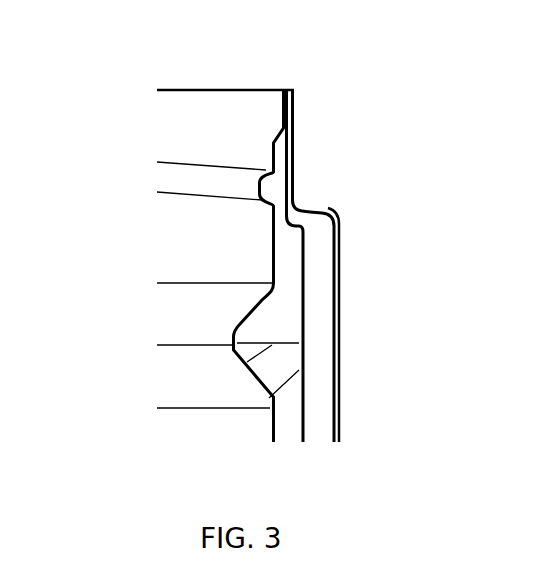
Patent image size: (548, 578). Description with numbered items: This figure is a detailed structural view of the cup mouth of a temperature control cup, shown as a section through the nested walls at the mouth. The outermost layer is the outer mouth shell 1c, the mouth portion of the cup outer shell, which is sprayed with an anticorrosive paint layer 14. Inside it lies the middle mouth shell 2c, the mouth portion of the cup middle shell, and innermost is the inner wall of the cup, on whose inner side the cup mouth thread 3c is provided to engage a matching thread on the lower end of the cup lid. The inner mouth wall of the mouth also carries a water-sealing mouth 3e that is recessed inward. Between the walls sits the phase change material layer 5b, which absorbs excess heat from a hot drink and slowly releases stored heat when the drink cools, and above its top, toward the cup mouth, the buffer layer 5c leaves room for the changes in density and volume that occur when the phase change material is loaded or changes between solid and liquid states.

The cup mouth thread 3c is at (261, 181).
The water-sealing mouth 3e is at (258, 378).
The outer mouth shell 1c is at (294, 122).
The middle mouth shell 2c is at (293, 220).
The anticorrosive paint layer 14 is at (337, 313).
The buffer layer 5c is at (288, 312).
The phase change material layer 5b is at (287, 375).